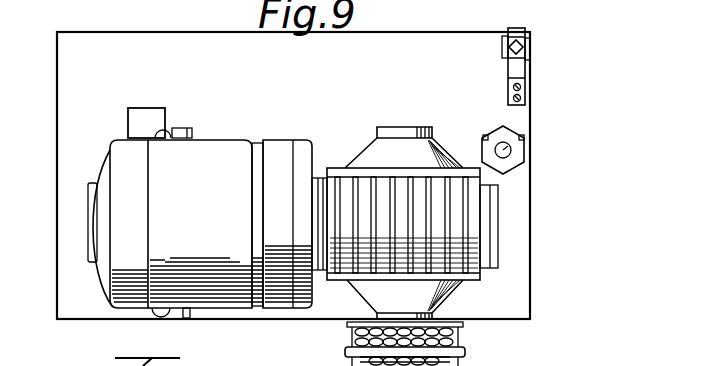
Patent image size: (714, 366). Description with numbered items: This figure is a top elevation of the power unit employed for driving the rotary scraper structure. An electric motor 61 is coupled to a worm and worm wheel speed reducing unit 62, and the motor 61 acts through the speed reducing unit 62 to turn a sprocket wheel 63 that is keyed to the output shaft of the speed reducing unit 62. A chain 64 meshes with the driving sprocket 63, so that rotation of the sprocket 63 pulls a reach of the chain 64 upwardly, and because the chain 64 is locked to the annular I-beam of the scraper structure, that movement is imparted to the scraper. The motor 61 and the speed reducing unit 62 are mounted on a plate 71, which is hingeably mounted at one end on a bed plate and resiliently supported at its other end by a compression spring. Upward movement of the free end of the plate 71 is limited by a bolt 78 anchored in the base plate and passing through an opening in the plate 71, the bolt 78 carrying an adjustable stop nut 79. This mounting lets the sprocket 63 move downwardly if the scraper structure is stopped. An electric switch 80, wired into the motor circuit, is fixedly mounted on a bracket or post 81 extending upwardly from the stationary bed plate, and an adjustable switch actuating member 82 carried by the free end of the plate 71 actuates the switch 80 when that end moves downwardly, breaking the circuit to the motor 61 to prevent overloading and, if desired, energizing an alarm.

The electric motor 61 is at (212, 147).
The worm and worm wheel speed reducing unit 62 is at (411, 143).
The sprocket wheel 63 is at (347, 326).
The chain 64 is at (470, 337).
The plate 71 is at (447, 42).
The bolt 78 is at (505, 151).
The adjustable stop nut 79 is at (510, 160).
The electric switch 80 is at (526, 46).
The bracket or post 81 is at (518, 30).
The adjustable switch actuating member 82 is at (521, 70).